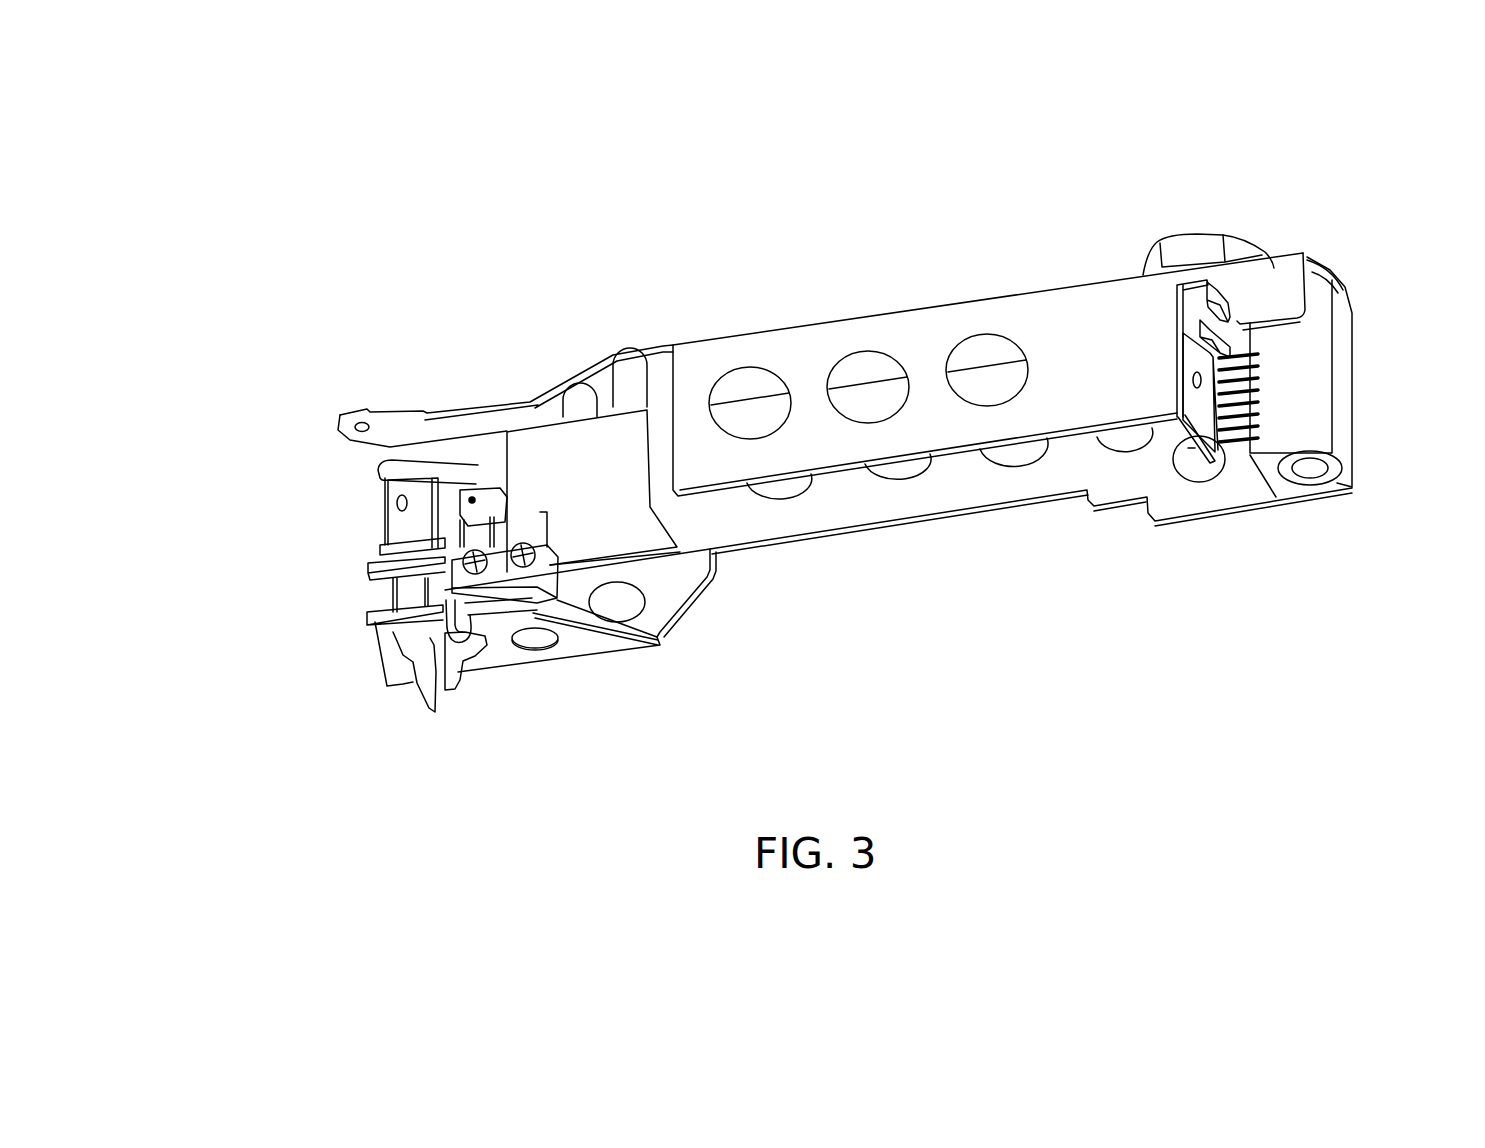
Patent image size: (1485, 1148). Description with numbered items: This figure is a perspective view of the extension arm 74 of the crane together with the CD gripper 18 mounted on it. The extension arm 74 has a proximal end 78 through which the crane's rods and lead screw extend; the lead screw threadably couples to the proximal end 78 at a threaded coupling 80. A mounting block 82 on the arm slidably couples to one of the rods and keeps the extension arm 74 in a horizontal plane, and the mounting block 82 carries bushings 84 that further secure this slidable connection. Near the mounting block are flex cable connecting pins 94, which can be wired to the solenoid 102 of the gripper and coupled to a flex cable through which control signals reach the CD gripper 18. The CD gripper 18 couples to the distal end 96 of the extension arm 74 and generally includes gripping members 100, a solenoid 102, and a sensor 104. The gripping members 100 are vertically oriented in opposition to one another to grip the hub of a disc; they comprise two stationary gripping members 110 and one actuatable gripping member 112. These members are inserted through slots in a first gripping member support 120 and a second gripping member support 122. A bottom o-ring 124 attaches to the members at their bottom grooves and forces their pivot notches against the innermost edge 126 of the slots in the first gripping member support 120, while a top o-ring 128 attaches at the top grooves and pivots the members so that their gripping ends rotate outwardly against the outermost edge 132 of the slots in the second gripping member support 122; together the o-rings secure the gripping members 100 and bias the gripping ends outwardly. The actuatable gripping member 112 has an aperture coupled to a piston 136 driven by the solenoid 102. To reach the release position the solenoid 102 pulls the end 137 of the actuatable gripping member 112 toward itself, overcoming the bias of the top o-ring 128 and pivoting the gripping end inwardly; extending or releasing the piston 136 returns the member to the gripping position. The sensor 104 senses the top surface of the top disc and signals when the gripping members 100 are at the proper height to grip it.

The CD gripper 18 is at (480, 354).
The extension arm 74 is at (877, 330).
The proximal end 78 is at (1258, 503).
The threaded coupling 80 is at (1253, 225).
The mounting block 82 is at (1342, 383).
The bushings 84 is at (1343, 290).
The flex cable connecting pins 94 is at (1273, 383).
The distal end 96 is at (423, 415).
The gripping members 100 is at (369, 689).
The solenoid 102 is at (563, 440).
The sensor 104 is at (540, 587).
The stationary gripping members 110 is at (427, 710).
The actuatable gripping member 112 is at (460, 675).
The first gripping member support 120 is at (368, 567).
The second gripping member support 122 is at (367, 620).
The bottom o-ring 124 is at (373, 547).
The innermost edge 126 is at (425, 588).
The top o-ring 128 is at (373, 472).
The outermost edge 132 is at (397, 628).
The piston 136 is at (487, 503).
The end 137 is at (447, 480).